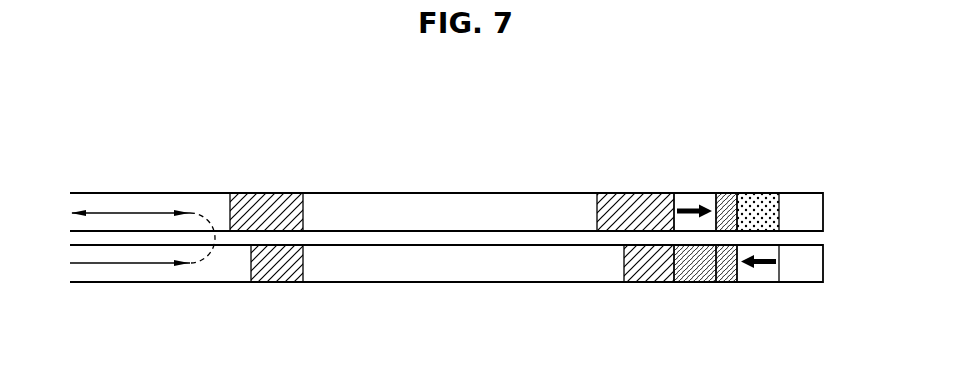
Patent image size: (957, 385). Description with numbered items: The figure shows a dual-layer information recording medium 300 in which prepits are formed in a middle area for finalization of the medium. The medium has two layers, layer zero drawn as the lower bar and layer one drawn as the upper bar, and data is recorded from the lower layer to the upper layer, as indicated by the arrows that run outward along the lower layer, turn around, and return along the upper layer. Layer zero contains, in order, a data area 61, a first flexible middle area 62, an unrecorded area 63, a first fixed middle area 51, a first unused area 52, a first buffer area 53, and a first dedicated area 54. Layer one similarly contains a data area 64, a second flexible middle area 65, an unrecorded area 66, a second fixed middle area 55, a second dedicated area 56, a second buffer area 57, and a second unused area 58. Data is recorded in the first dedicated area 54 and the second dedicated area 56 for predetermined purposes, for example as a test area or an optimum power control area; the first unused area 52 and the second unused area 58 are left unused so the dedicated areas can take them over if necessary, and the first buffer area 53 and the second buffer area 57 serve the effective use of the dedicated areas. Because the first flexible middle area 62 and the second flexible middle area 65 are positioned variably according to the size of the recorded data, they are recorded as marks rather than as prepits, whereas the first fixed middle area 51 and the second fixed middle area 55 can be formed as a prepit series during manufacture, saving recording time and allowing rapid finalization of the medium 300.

The information recording medium 300 is at (538, 136).
The data area 64 is at (141, 203).
The second flexible middle area 65 is at (263, 200).
The unrecorded area 66 is at (450, 203).
The second fixed middle area 55 is at (638, 198).
The second dedicated area 56 is at (687, 198).
The second buffer area 57 is at (724, 198).
The second unused area 58 is at (758, 198).
The data area 61 is at (141, 272).
The first flexible middle area 62 is at (275, 282).
The unrecorded area 63 is at (450, 272).
The first fixed middle area 51 is at (650, 275).
The first unused area 52 is at (697, 282).
The first buffer area 53 is at (725, 282).
The first dedicated area 54 is at (758, 275).